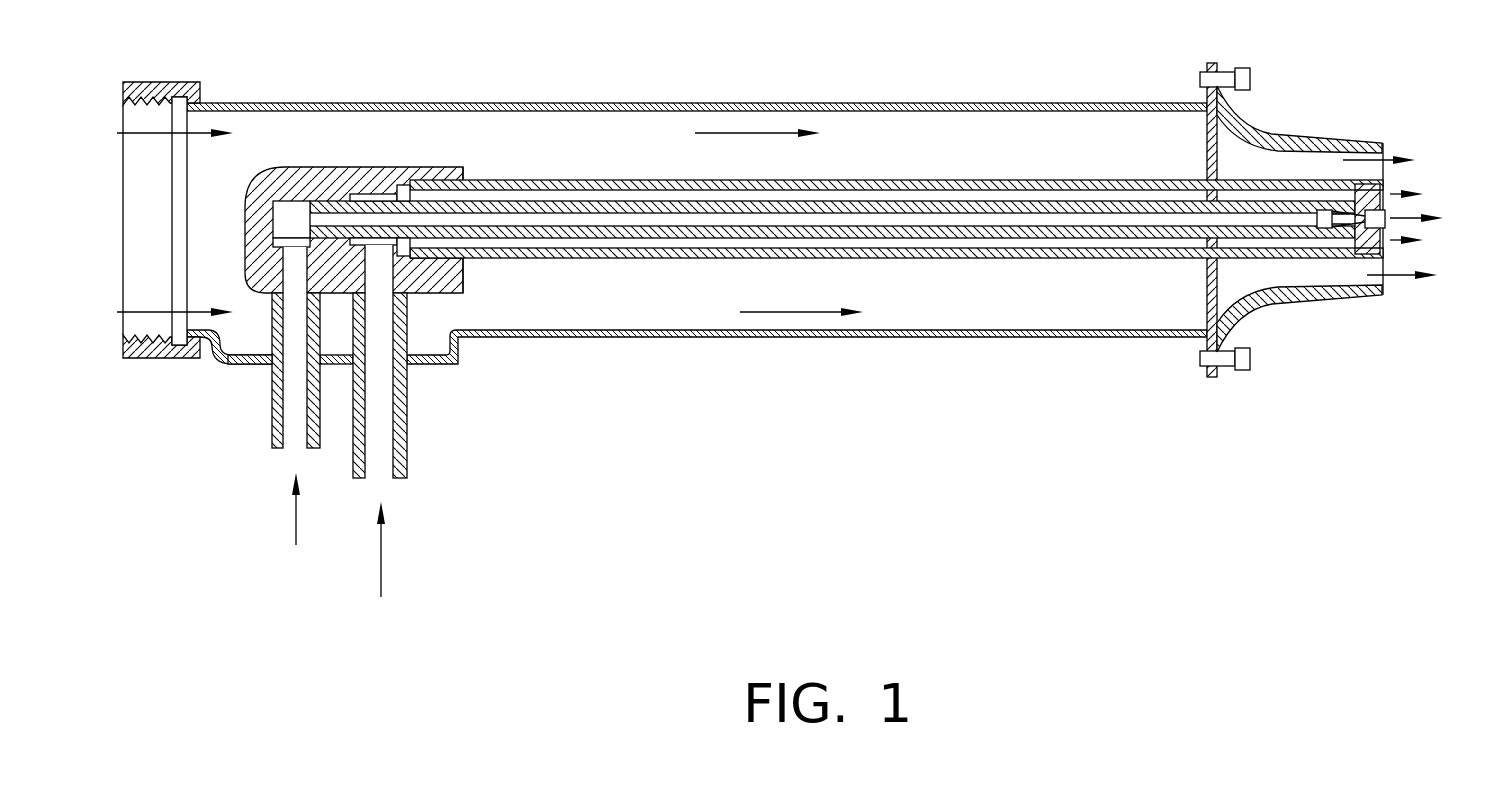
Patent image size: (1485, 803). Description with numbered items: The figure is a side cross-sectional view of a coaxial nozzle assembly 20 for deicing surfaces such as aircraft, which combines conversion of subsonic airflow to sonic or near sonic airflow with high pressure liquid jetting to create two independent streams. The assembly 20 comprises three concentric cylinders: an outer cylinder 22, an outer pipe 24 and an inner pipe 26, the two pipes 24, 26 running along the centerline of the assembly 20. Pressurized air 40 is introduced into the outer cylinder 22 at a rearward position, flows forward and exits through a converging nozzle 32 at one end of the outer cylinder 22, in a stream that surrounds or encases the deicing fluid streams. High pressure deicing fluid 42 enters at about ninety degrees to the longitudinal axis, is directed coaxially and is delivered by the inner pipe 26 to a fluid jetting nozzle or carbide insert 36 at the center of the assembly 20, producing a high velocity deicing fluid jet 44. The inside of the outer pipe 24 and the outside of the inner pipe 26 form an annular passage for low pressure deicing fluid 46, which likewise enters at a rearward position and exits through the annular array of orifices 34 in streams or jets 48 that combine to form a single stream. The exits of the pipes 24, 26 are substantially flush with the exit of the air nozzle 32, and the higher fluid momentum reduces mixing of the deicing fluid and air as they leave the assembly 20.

The coaxial nozzle assembly 20 is at (806, 432).
The outer cylinder 22 is at (760, 102).
The outer pipe 24 is at (920, 178).
The inner pipe 26 is at (1050, 200).
The converging nozzle 32 is at (1280, 130).
The annular array of orifices 34 is at (1386, 195).
The fluid jetting nozzle or carbide insert 36 is at (1318, 222).
The pressurized air 40 is at (197, 135).
The high pressure deicing fluid 42 is at (295, 527).
The high velocity deicing fluid stream or jet 44 is at (1400, 217).
The low pressure deicing fluid 46 is at (381, 557).
The low pressure deicing fluid streams or jets 48 is at (1410, 240).